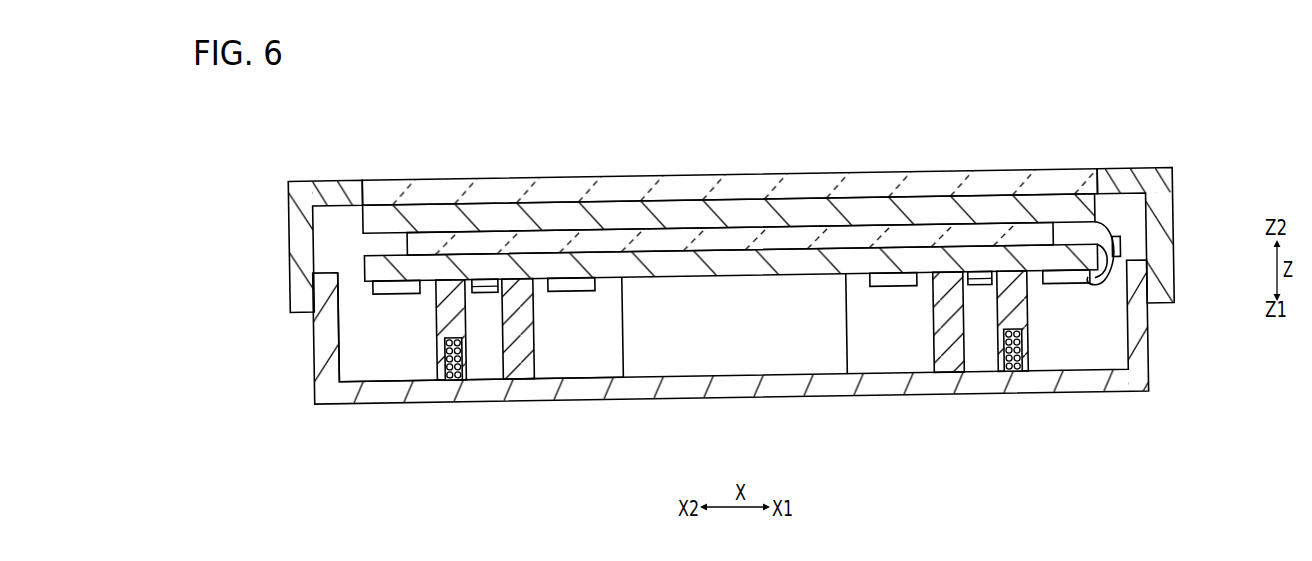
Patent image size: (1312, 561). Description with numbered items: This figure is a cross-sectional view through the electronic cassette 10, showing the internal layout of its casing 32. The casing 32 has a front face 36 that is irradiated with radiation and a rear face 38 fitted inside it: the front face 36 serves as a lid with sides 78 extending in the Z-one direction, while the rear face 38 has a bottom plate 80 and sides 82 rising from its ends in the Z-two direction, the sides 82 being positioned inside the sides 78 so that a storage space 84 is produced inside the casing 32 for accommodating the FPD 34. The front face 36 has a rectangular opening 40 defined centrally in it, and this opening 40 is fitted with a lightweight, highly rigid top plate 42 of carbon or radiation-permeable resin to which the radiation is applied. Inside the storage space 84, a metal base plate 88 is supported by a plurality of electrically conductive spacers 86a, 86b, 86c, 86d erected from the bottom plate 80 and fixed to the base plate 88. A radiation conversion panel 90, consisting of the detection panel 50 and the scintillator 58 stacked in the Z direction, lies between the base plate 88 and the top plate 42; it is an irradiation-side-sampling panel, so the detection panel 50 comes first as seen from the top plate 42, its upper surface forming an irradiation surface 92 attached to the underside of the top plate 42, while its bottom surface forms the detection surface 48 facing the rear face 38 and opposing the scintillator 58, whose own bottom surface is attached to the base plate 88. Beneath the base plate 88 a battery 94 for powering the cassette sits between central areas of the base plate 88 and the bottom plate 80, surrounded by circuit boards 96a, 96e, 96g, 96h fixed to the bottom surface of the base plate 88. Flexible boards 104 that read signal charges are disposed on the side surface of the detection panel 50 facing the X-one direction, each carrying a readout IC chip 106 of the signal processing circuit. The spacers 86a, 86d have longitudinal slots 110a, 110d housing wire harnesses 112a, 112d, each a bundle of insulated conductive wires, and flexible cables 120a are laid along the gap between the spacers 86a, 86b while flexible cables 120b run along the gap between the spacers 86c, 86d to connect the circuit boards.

The electronic cassette 10 is at (850, 93).
The casing 32 is at (1015, 150).
The FPD 34 is at (1120, 221).
The front face 36 is at (1121, 163).
The rear face 38 is at (1158, 360).
The opening 40 is at (367, 194).
The top plate 42 is at (606, 190).
The detection surface 48 is at (662, 241).
The detection panel 50 is at (734, 212).
The scintillator 58 is at (790, 242).
The sides 78 is at (296, 251).
The bottom plate 80 is at (828, 385).
The sides 82 is at (325, 350).
The storage space 84 is at (352, 364).
The spacer 86a is at (448, 323).
The spacer 86b is at (524, 368).
The spacer 86c is at (947, 354).
The spacer 86d is at (1010, 314).
The base plate 88 is at (676, 278).
The radiation conversion panel 90 is at (798, 130).
The irradiation surface 92 is at (551, 206).
The battery 94 is at (737, 358).
The circuit board 96a is at (384, 288).
The circuit board 96e is at (572, 287).
The circuit board 96g is at (893, 288).
The circuit board 96h is at (1062, 285).
The flexible board 104 is at (1097, 286).
The readout IC chip 106 is at (1123, 245).
The slot 110a is at (445, 356).
The slot 110d is at (1023, 345).
The wire harness 112a is at (451, 377).
The wire harness 112d is at (1017, 371).
The flexible cable 120a is at (478, 280).
The flexible cable 120b is at (977, 278).